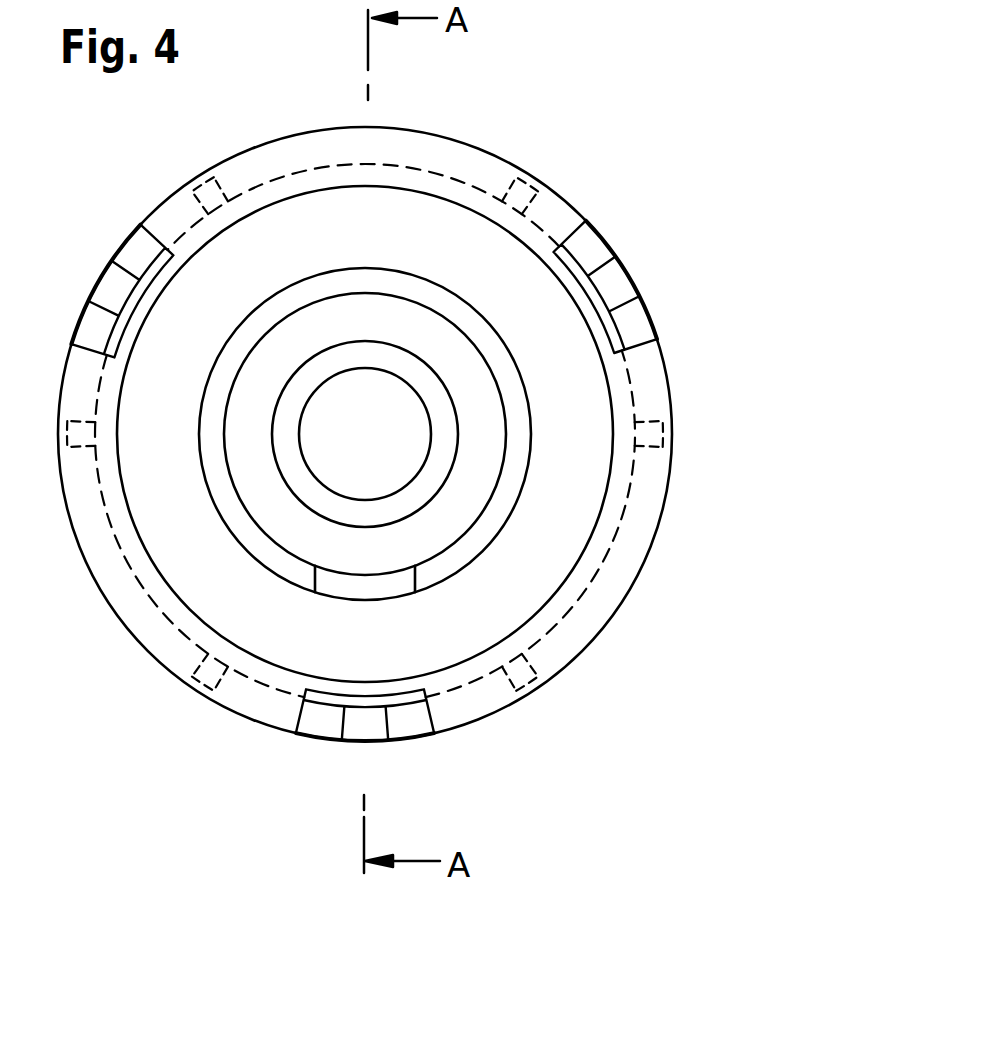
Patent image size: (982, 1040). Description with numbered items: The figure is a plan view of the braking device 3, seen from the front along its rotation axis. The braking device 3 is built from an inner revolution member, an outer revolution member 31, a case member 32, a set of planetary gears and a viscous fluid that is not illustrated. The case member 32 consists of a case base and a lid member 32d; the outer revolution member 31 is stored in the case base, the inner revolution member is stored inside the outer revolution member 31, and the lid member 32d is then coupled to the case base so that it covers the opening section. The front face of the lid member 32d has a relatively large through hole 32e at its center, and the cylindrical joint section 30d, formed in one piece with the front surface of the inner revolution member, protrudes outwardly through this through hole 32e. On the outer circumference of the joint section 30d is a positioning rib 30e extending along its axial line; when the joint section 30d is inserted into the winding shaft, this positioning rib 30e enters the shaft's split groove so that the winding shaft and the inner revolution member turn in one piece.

The braking device 3 is at (640, 111).
The joint section 30d is at (392, 320).
The positioning rib 30e is at (397, 587).
The outer revolution member 31 is at (578, 513).
The case member 32 is at (445, 481).
The lid member 32d is at (635, 397).
The through hole 32e is at (532, 588).